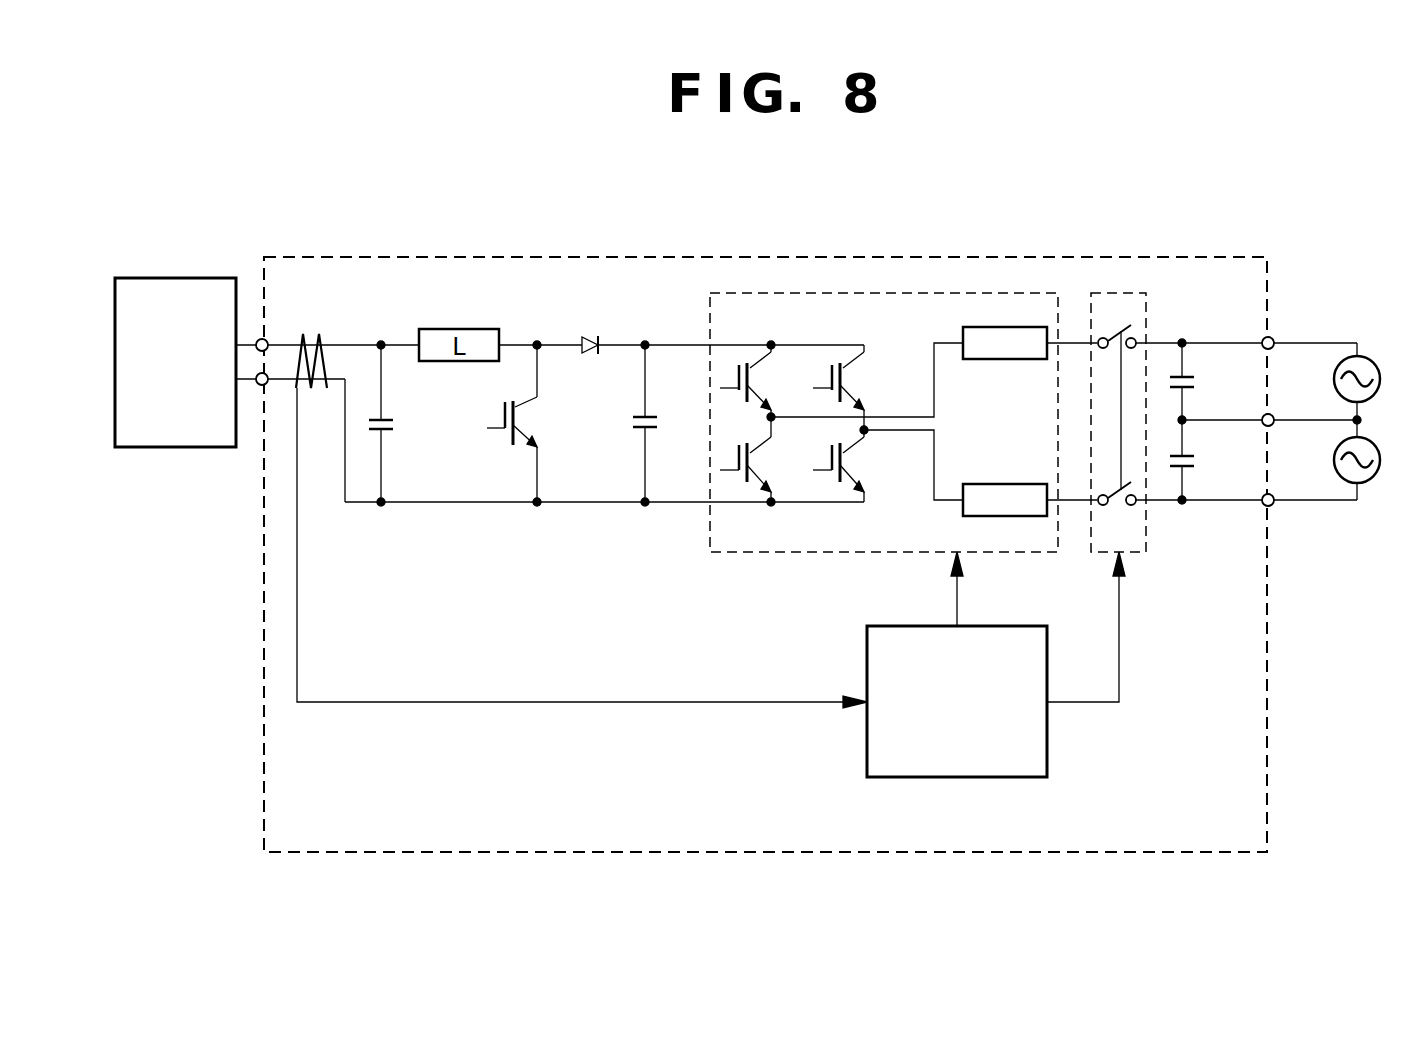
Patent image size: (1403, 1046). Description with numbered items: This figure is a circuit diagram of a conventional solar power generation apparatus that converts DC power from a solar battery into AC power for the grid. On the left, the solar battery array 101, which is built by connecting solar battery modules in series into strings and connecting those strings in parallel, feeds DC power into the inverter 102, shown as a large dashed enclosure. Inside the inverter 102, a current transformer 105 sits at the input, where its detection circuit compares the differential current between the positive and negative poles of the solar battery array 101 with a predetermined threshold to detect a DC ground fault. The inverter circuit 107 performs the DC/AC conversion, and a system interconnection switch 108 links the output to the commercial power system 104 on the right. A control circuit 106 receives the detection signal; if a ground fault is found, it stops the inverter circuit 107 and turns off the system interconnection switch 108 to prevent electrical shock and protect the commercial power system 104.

The solar battery array 101 is at (177, 278).
The inverter 102 is at (1223, 256).
The commercial power system 104 is at (1378, 357).
The current transformer 105 is at (325, 334).
The control circuit 106 is at (912, 626).
The inverter circuit 107 is at (888, 291).
The system interconnection switch 108 is at (1118, 291).